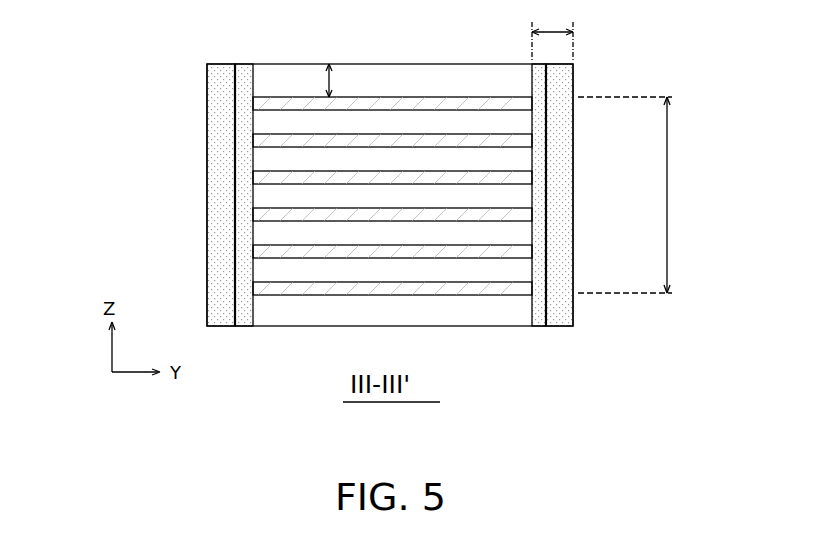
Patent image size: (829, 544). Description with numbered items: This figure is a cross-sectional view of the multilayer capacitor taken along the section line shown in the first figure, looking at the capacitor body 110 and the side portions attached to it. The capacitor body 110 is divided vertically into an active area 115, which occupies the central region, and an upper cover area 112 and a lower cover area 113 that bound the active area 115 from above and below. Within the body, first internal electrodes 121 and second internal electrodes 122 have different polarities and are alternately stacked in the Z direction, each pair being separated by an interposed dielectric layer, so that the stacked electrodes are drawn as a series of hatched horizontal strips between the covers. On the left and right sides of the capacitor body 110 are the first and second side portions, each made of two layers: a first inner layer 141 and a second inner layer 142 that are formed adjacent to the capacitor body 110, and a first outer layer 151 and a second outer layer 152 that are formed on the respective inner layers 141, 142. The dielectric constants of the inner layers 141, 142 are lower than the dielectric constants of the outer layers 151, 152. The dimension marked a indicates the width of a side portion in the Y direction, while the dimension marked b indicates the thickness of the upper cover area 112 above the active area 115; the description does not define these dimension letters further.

The capacitor body 110 is at (270, 64).
The upper cover area 112 is at (503, 82).
The lower cover area 113 is at (502, 313).
The first internal electrode 121 is at (386, 103).
The second internal electrode 122 is at (452, 140).
The first inner layer 141 is at (245, 155).
The second inner layer 142 is at (537, 158).
The first outer layer 151 is at (225, 207).
The second outer layer 152 is at (553, 207).
The active area 115 is at (646, 195).
The external electrode thickness a is at (552, 32).
The cover thickness b is at (329, 64).